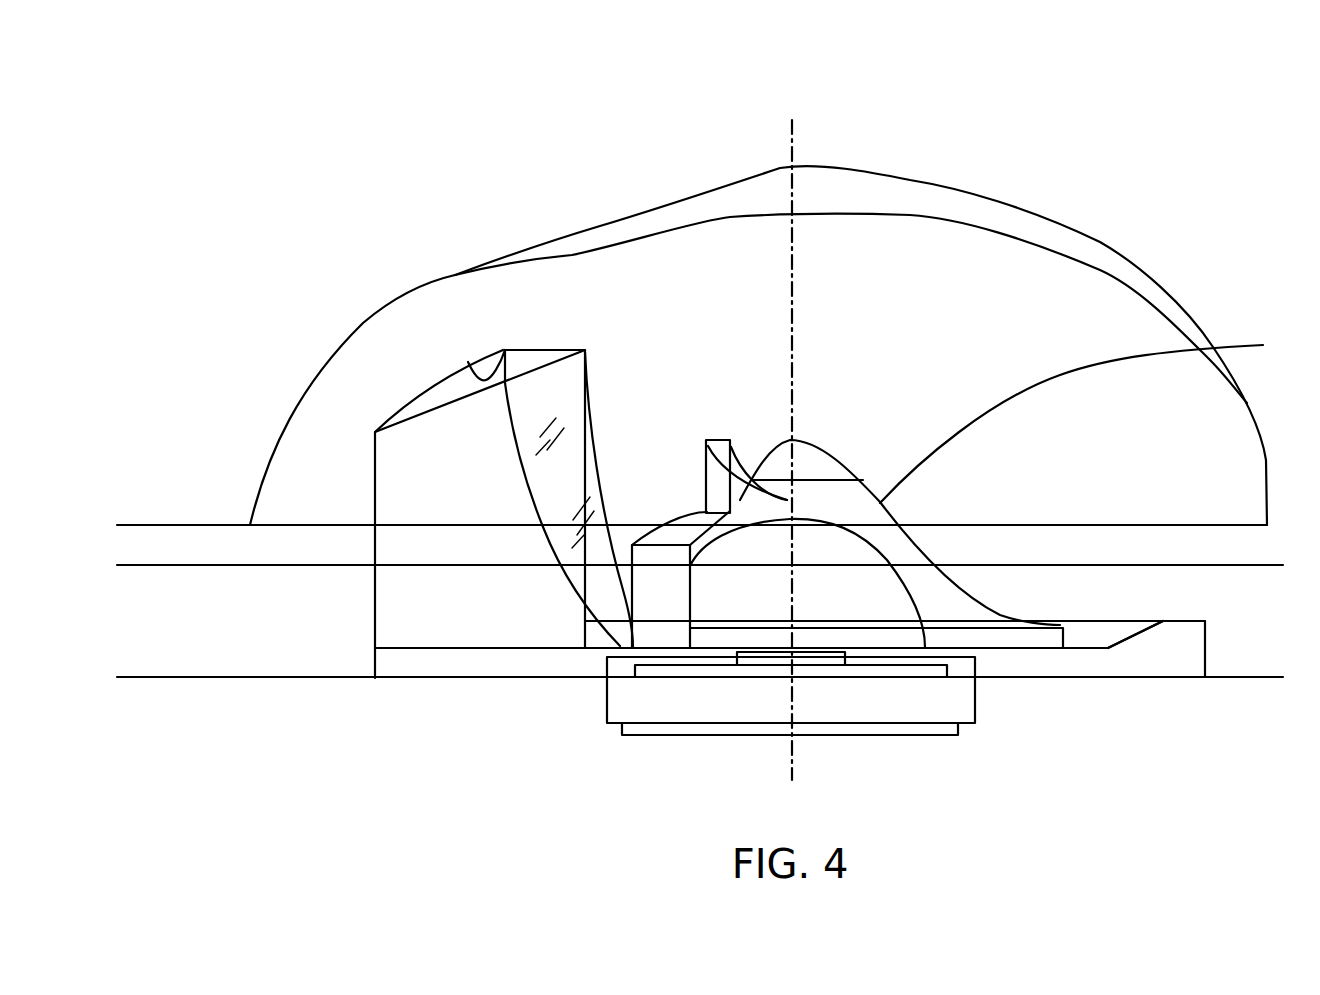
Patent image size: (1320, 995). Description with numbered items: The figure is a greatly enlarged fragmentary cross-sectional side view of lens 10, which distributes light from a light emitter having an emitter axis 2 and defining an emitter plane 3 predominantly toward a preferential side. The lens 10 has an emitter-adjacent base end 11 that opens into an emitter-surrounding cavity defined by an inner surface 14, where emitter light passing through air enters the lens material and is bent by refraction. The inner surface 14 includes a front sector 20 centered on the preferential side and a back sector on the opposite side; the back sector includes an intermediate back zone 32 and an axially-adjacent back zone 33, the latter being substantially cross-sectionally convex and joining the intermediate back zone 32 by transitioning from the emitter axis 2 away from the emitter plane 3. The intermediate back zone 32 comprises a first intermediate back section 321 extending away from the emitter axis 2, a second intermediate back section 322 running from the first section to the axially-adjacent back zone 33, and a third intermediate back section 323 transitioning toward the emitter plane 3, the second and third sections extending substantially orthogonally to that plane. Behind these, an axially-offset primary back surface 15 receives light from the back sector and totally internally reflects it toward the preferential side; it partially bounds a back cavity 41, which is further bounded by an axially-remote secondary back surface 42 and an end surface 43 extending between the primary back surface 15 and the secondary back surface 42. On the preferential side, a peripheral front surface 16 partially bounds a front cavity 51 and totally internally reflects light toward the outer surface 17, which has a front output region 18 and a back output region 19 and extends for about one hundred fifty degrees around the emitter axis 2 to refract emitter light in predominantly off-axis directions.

The lens 10 is at (1175, 118).
The emitter axis 2 is at (800, 147).
The emitter plane 3 is at (812, 652).
The emitter-adjacent base end 11 is at (340, 680).
The inner surface 14 is at (915, 580).
The primary back surface 15 is at (527, 480).
The peripheral front surface 16 is at (1135, 635).
The outer surface 17 is at (910, 178).
The front output region 18 is at (1080, 252).
The back output region 19 is at (563, 250).
The front sector 20 is at (1087, 416).
The intermediate back zone 32 is at (632, 640).
The axially-adjacent back zone 33 is at (752, 478).
The back cavity 41 is at (428, 607).
The secondary back surface 42 is at (375, 500).
The end surface 43 is at (470, 380).
The front cavity 51 is at (1183, 652).
The first intermediate back section 321 is at (740, 500).
The second intermediate back section 322 is at (750, 485).
The third intermediate back section 323 is at (632, 595).